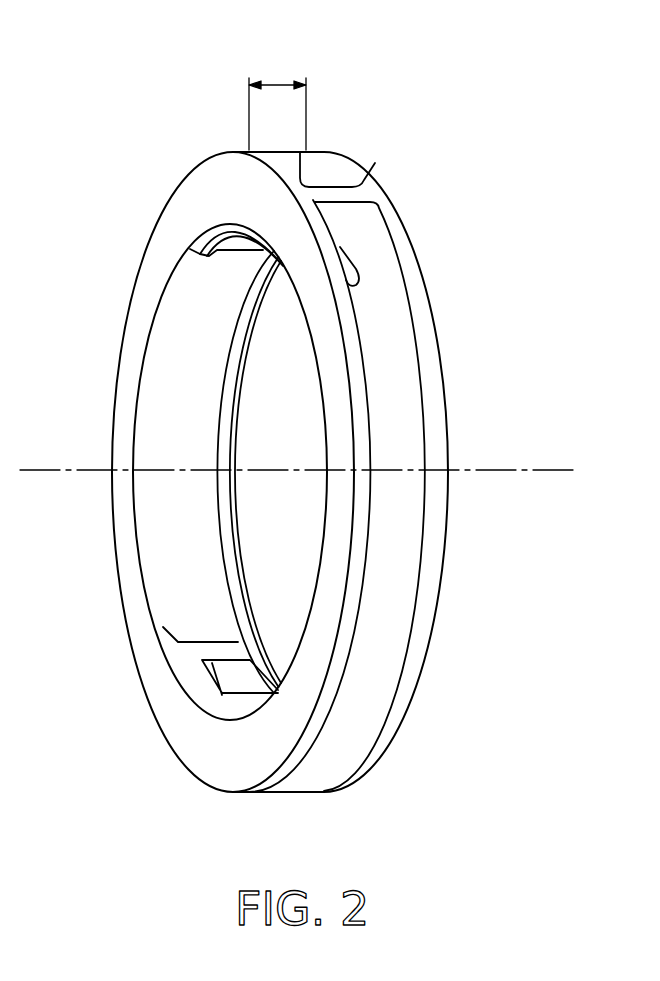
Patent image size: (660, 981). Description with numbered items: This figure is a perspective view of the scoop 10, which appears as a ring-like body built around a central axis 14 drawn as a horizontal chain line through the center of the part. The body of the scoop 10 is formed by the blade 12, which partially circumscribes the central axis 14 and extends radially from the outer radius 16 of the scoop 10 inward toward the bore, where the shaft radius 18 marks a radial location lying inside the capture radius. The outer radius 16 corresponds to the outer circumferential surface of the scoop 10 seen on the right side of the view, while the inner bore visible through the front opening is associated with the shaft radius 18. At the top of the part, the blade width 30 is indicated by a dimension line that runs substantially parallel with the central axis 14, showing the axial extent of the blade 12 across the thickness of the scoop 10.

The scoop 10 is at (536, 217).
The blade 12 is at (337, 193).
The central axis 14 is at (50, 470).
The outer radius 16 is at (444, 385).
The shaft radius 18 is at (323, 406).
The blade width 30 is at (277, 85).